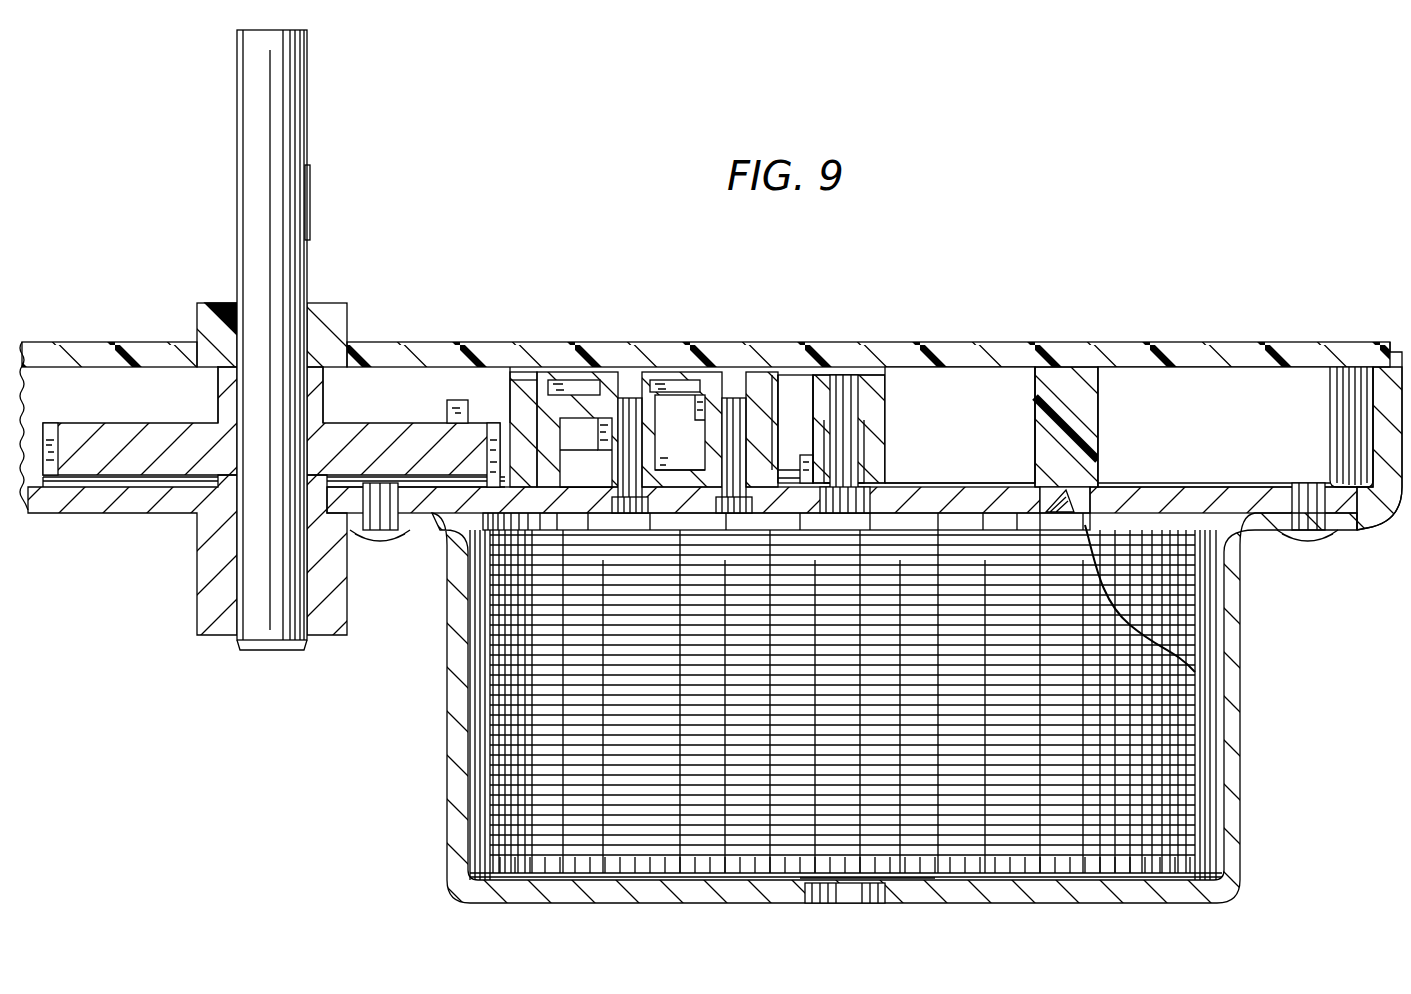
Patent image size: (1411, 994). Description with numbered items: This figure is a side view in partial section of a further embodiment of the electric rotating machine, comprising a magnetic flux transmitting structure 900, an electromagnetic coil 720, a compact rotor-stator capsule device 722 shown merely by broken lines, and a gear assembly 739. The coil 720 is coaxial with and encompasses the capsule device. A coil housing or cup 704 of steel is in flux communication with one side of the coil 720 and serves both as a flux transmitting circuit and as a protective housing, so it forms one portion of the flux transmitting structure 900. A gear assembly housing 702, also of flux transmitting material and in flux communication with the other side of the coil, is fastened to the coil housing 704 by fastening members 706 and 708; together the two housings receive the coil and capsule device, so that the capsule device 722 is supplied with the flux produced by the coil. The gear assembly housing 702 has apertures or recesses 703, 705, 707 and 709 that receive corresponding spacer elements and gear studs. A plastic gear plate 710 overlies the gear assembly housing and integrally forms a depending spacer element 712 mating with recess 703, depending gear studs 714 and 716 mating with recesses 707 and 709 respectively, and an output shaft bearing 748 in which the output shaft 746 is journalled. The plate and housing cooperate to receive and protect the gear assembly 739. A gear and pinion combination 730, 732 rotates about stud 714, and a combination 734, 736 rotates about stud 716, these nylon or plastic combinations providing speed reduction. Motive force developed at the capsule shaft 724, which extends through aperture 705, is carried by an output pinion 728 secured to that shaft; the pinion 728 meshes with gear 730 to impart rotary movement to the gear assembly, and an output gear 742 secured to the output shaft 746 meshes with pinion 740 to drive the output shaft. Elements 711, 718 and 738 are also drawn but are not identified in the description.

The magnetic flux transmitting structure 900 is at (1367, 525).
The gear assembly housing 702 is at (1375, 405).
The aperture or recess 703 is at (1040, 492).
The coil housing or cup 704 is at (1242, 637).
The aperture 705 is at (880, 487).
The fastening member 706 is at (1307, 547).
The aperture or recess 707 is at (720, 478).
The fastening member 708 is at (390, 548).
The aperture or recess 709 is at (622, 488).
The gear plate 710 is at (1252, 342).
The spacer plate 711 is at (528, 478).
The spacer element 712 is at (1098, 400).
The gear stud 714 is at (732, 398).
The gear stud 716 is at (635, 398).
The plate 718 is at (508, 395).
The electromagnetic coil 720 is at (1218, 768).
The rotor-stator capsule device 722 is at (960, 832).
The capsule shaft 724 is at (842, 382).
The output pinion 728 is at (885, 399).
The gear 730 is at (792, 466).
The pinion 732 is at (779, 414).
The gear 734 is at (675, 372).
The pinion 736 is at (663, 425).
The spacer 738 is at (468, 403).
The gear assembly 739 is at (910, 323).
The pinion 740 is at (560, 456).
The output gear 742 is at (365, 438).
The output shaft 746 is at (310, 228).
The output shaft bearing 748 is at (342, 318).